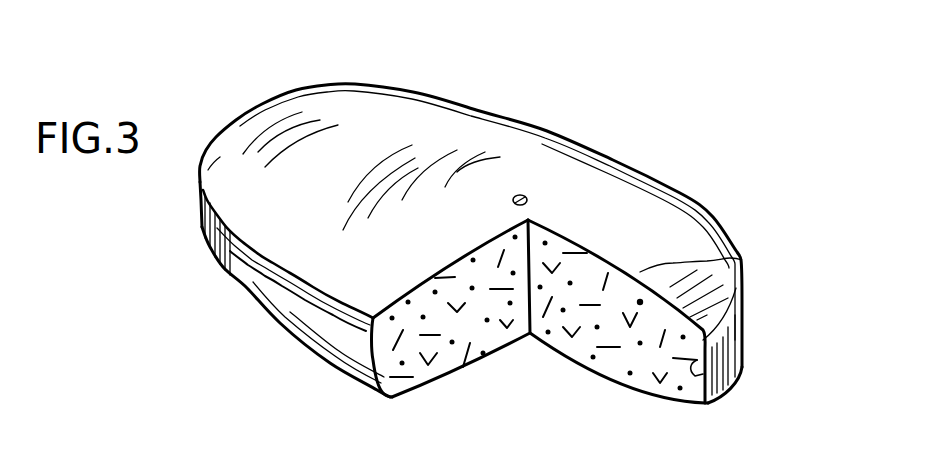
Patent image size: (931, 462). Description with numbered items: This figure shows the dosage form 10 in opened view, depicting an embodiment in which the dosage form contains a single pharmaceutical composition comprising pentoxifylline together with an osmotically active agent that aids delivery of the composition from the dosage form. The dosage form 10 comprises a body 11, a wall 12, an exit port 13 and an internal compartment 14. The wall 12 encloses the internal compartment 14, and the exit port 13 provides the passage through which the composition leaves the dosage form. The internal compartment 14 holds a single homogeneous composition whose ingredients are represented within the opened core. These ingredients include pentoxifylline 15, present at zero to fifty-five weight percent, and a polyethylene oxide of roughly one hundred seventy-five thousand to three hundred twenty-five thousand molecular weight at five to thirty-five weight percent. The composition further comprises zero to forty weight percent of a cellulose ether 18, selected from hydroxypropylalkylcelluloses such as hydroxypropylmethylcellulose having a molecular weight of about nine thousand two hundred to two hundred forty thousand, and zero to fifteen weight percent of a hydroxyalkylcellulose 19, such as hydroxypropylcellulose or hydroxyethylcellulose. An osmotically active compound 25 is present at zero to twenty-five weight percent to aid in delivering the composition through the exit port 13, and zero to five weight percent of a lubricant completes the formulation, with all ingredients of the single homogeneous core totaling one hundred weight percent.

The dosage form 10 is at (637, 144).
The body 11 is at (680, 193).
The wall 12 is at (707, 213).
The exit port 13 is at (523, 194).
The internal compartment 14 is at (690, 267).
The pentoxifylline 15 is at (641, 303).
The cellulose ether 18 is at (728, 373).
The hydroxyalkylcellulose 19 is at (400, 335).
The osmotically active compound 25 is at (440, 363).